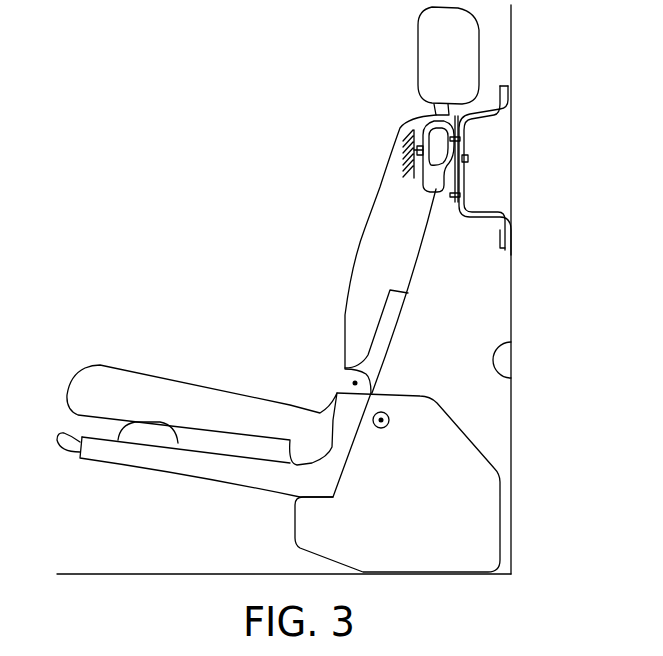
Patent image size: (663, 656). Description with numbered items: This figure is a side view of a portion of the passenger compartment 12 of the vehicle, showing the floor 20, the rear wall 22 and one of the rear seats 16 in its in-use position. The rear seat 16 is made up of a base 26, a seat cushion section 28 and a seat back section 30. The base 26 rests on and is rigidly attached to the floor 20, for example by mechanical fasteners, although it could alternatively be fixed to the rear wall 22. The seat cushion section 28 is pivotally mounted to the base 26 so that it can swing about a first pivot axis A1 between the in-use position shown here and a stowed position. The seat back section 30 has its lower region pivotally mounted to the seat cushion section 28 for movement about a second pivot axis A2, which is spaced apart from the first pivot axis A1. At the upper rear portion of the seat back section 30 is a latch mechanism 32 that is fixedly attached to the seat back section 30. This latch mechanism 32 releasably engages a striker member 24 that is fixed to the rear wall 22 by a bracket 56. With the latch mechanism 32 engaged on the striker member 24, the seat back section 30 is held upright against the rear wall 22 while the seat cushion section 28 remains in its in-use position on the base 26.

The passenger compartment 12 is at (208, 143).
The rear seat 16 is at (197, 404).
The floor 20 is at (160, 573).
The rear wall 22 is at (512, 380).
The striker member 24 is at (430, 189).
The base 26 is at (317, 526).
The seat cushion section 28 is at (147, 390).
The seat back section 30 is at (387, 252).
The latch mechanism 32 is at (437, 153).
The bracket 56 is at (472, 221).
The first pivot axis A1 is at (386, 428).
The second pivot axis A2 is at (355, 383).